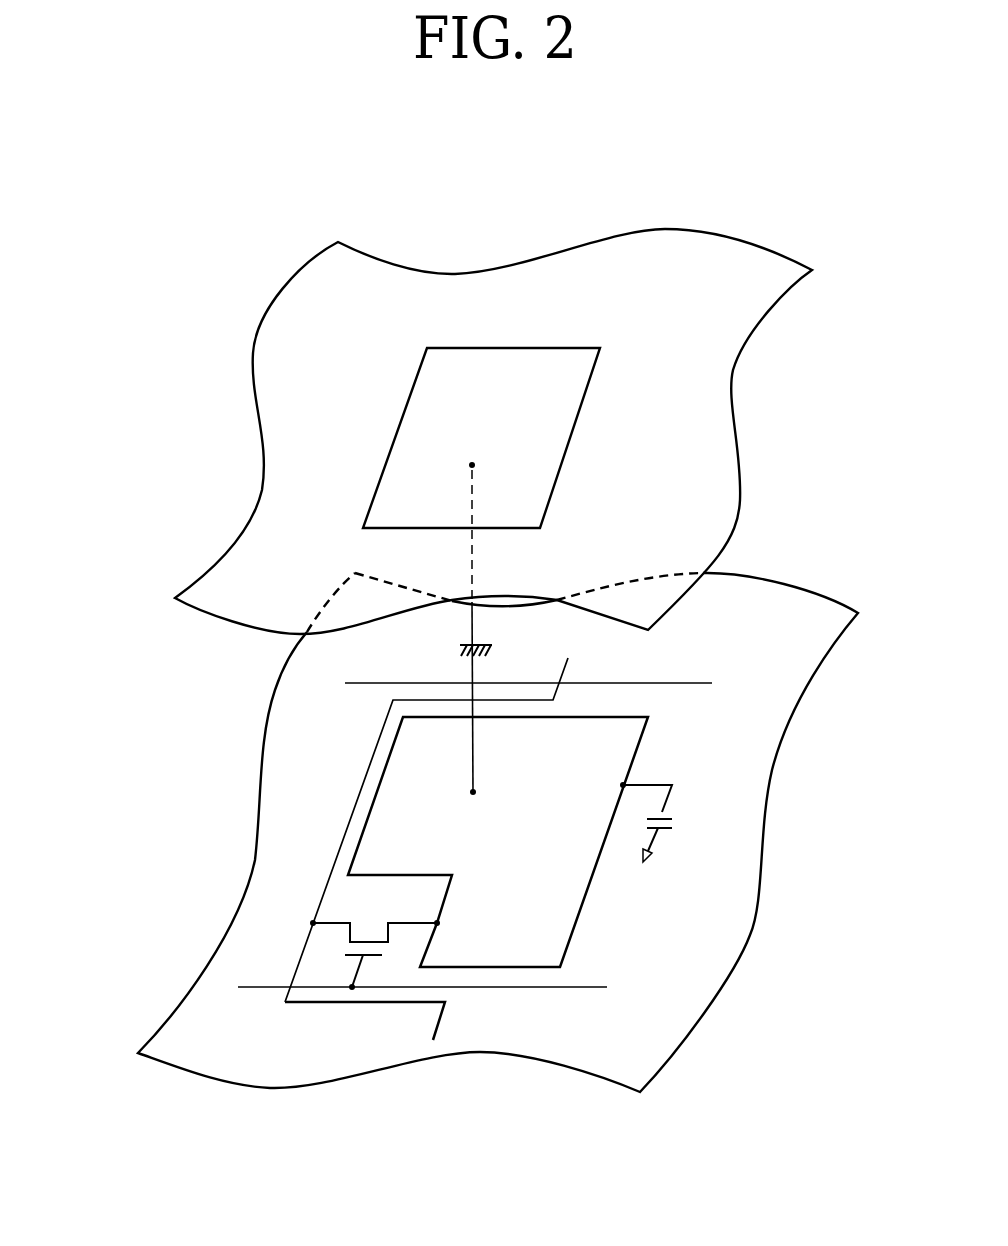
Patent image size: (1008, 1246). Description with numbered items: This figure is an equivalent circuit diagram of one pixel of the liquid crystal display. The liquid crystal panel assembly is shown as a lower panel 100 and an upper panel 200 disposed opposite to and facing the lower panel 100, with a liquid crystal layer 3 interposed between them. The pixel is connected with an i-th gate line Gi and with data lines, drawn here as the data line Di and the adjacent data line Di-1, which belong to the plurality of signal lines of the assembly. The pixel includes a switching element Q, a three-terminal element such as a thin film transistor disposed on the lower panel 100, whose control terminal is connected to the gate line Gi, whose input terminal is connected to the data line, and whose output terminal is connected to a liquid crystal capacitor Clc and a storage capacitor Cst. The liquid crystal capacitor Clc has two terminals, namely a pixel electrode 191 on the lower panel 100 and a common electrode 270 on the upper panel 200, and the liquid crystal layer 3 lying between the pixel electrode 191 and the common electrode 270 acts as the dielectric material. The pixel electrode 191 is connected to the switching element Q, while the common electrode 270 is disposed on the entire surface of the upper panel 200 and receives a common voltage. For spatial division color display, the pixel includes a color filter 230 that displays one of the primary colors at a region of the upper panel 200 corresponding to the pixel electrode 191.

The liquid crystal layer 3 is at (284, 631).
The lower panel 100 is at (509, 832).
The pixel electrode 191 is at (582, 918).
The upper panel 200 is at (526, 431).
The color filter 230 is at (572, 437).
The common electrode 270 is at (733, 402).
The switching element Q is at (375, 938).
The storage capacitor Cst is at (674, 822).
The liquid crystal capacitor Clc is at (449, 631).
The gate line Gi is at (438, 829).
The data line Di is at (441, 987).
The data line Di-1 is at (557, 684).